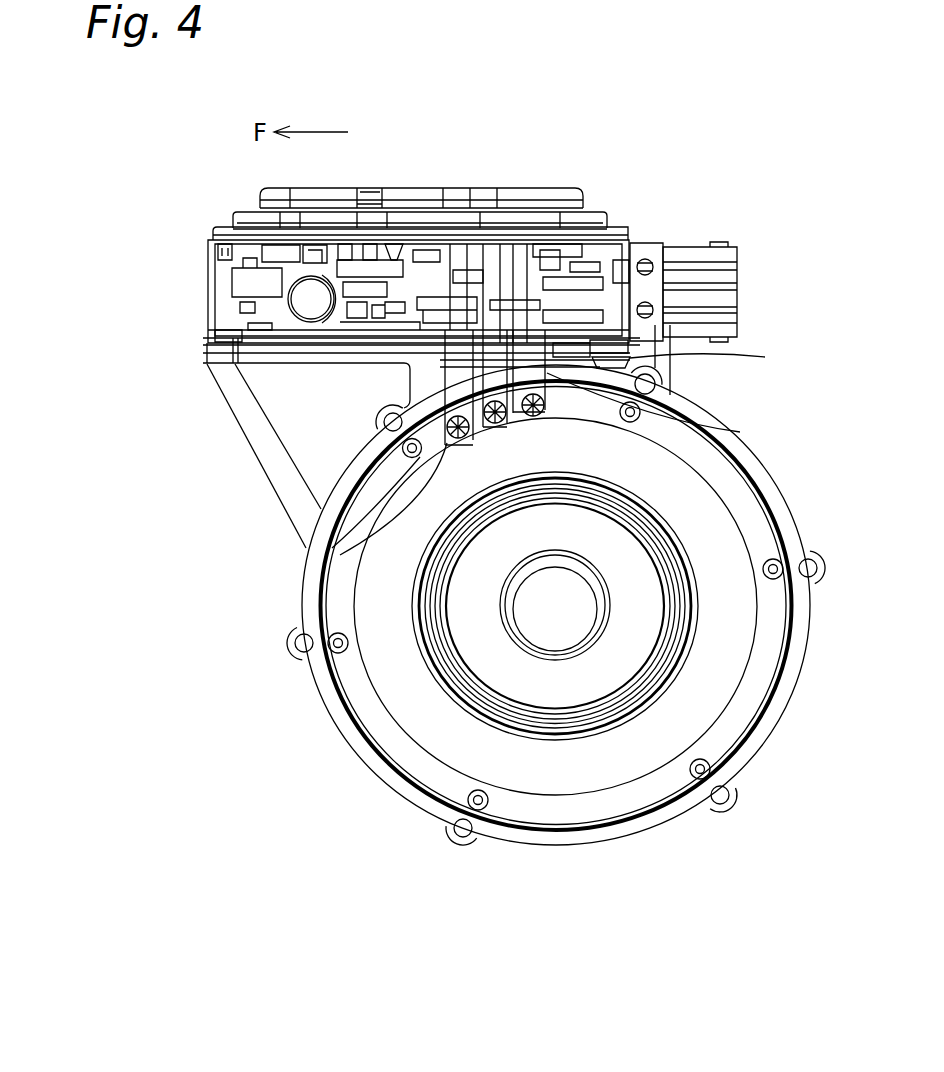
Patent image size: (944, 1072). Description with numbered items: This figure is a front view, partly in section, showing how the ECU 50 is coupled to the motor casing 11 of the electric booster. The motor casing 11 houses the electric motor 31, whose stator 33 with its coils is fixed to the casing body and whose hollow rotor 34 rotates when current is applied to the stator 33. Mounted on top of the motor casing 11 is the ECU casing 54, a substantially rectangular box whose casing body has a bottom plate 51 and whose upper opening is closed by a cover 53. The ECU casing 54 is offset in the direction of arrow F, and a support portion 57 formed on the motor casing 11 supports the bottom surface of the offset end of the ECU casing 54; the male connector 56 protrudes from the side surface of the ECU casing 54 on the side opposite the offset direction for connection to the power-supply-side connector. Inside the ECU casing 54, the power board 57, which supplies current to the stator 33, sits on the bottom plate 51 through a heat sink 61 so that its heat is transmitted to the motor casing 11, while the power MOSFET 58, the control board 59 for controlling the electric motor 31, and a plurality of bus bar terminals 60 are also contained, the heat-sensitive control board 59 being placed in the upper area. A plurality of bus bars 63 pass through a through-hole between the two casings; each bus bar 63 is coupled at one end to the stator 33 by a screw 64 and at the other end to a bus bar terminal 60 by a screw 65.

The casing 11 is at (760, 740).
The electric motor 31 is at (411, 782).
The stator 33 is at (372, 738).
The hollow rotor 34 is at (573, 727).
The ECU 50 is at (454, 341).
The bottom plate 51 is at (280, 352).
The cover 53 is at (262, 196).
The ECU casing 54 is at (192, 320).
The connector 56 is at (738, 265).
The support portion 57 is at (328, 338).
The power MOSFET 58 is at (383, 331).
The control board 59 is at (367, 200).
The bus bar terminal 60 is at (507, 310).
The heat sink 61 is at (292, 337).
The bus bar 63 is at (650, 370).
The screw 64 is at (450, 440).
The screw 65 is at (462, 322).